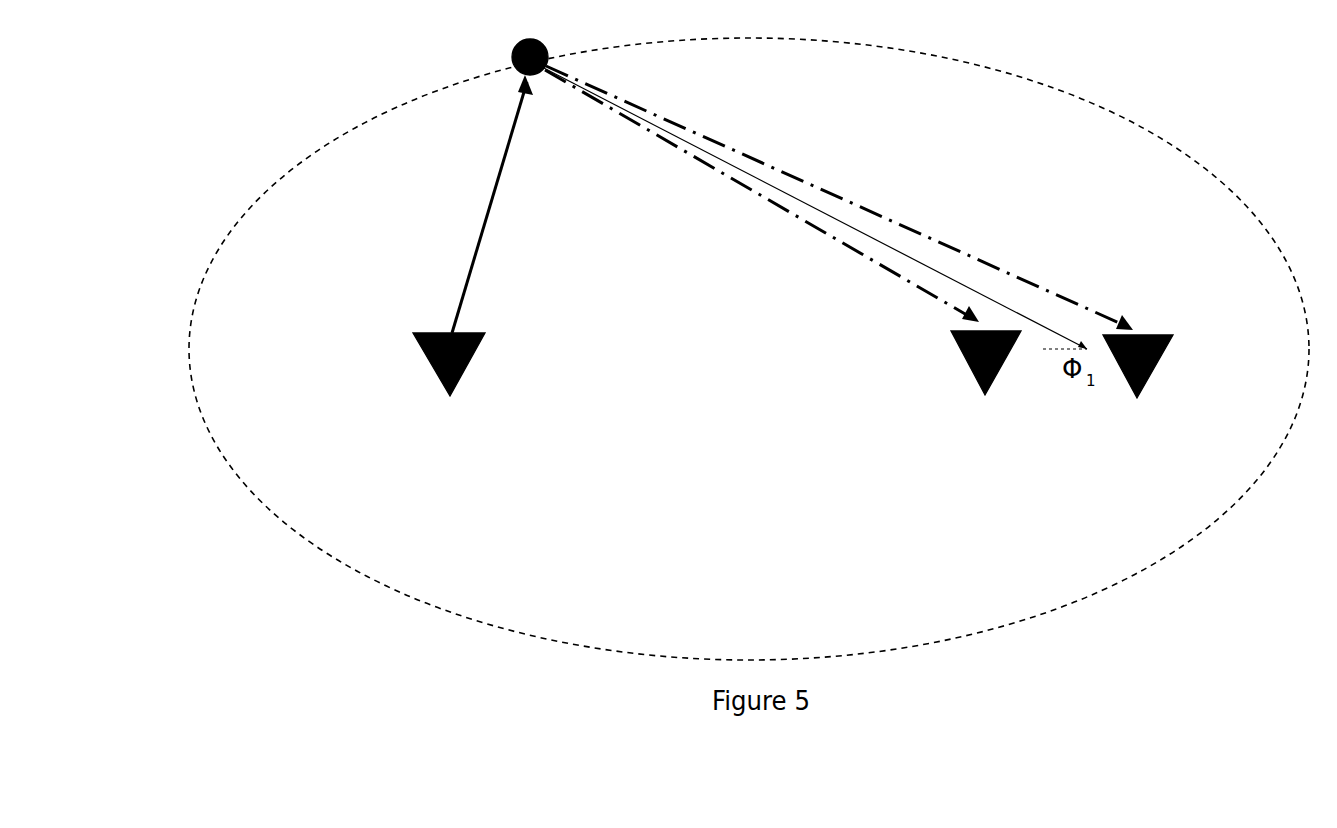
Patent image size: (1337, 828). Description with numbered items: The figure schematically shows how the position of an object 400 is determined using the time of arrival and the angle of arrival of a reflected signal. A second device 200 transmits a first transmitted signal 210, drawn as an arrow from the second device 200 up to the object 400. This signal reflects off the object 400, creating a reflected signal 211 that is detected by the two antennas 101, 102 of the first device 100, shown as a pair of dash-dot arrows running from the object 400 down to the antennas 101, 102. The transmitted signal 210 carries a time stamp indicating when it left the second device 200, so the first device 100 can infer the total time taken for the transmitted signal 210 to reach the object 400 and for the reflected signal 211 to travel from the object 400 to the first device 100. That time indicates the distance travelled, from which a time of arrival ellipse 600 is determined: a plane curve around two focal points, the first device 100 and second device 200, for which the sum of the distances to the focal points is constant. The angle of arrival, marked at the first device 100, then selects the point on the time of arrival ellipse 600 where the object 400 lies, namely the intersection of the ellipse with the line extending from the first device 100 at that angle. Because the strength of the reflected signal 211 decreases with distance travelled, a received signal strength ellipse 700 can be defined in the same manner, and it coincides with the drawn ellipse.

The first device 100 is at (749, 349).
The antenna 101 is at (986, 383).
The antenna 102 is at (1138, 385).
The second device 200 is at (410, 372).
The transmitted signal 210 is at (484, 204).
The reflected signal 211 is at (839, 198).
The object 400 is at (509, 49).
The time of arrival ellipse 600 is at (716, 349).
The received signal strength ellipse 700 is at (716, 349).